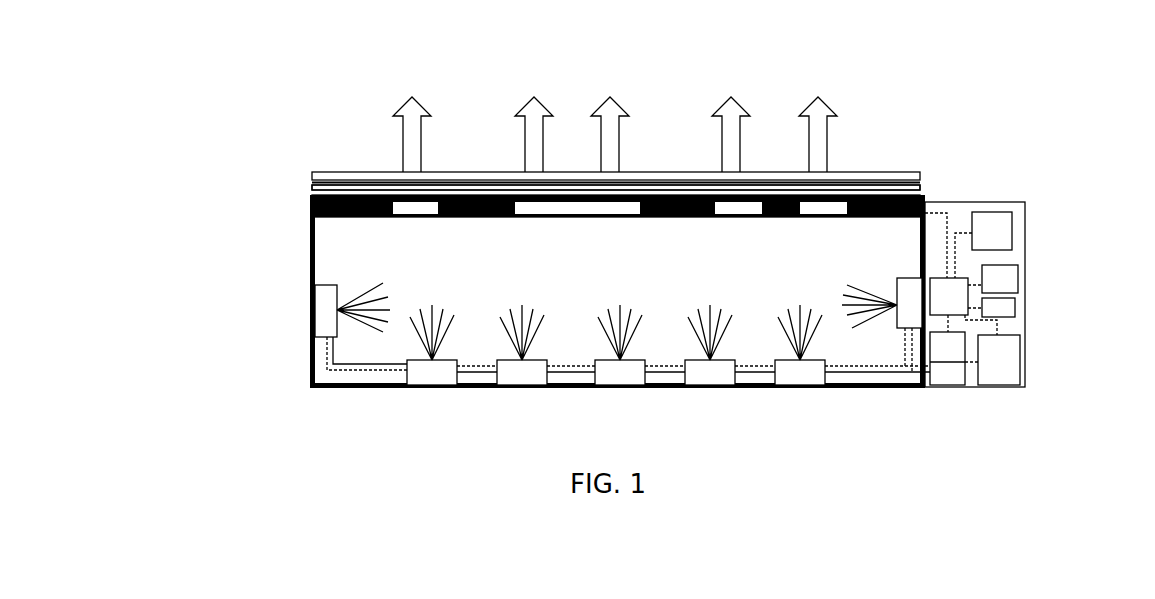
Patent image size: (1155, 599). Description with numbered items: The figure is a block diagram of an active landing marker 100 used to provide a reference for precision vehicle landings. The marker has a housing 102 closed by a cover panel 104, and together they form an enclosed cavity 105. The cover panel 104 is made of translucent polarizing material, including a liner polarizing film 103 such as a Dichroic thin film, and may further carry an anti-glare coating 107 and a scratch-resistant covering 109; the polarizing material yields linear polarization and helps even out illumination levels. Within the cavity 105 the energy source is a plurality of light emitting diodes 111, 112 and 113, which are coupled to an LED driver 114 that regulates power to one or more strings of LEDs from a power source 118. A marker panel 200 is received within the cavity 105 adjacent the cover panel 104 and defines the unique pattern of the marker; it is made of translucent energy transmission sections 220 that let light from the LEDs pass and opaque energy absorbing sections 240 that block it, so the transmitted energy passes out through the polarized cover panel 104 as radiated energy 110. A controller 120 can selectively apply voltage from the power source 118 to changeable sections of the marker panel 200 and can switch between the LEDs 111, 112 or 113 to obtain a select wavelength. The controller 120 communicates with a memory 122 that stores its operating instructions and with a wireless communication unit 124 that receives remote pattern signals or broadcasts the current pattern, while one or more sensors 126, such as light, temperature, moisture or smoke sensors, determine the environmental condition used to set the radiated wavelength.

The active landing marker 100 is at (1033, 122).
The housing 102 is at (310, 255).
The liner polarizing film 103 is at (310, 187).
The cover panel 104 is at (311, 171).
The cavity 105 is at (358, 250).
The anti-glare coating 107 is at (338, 183).
The scratch-resistant covering 109 is at (366, 178).
The radiated energy 110 is at (412, 135).
The light emitting diodes 111 is at (323, 338).
The light emitting diodes 112 is at (442, 388).
The light emitting diodes 113 is at (542, 388).
The LED driver 114 is at (947, 358).
The power source 118 is at (999, 360).
The controller 120 is at (949, 296).
The memory 122 is at (1000, 279).
The wireless communication unit 124 is at (992, 231).
The sensors 126 is at (1010, 308).
The marker panel 200 is at (310, 195).
The energy transmission sections 220 is at (732, 217).
The energy absorbing sections 240 is at (778, 217).